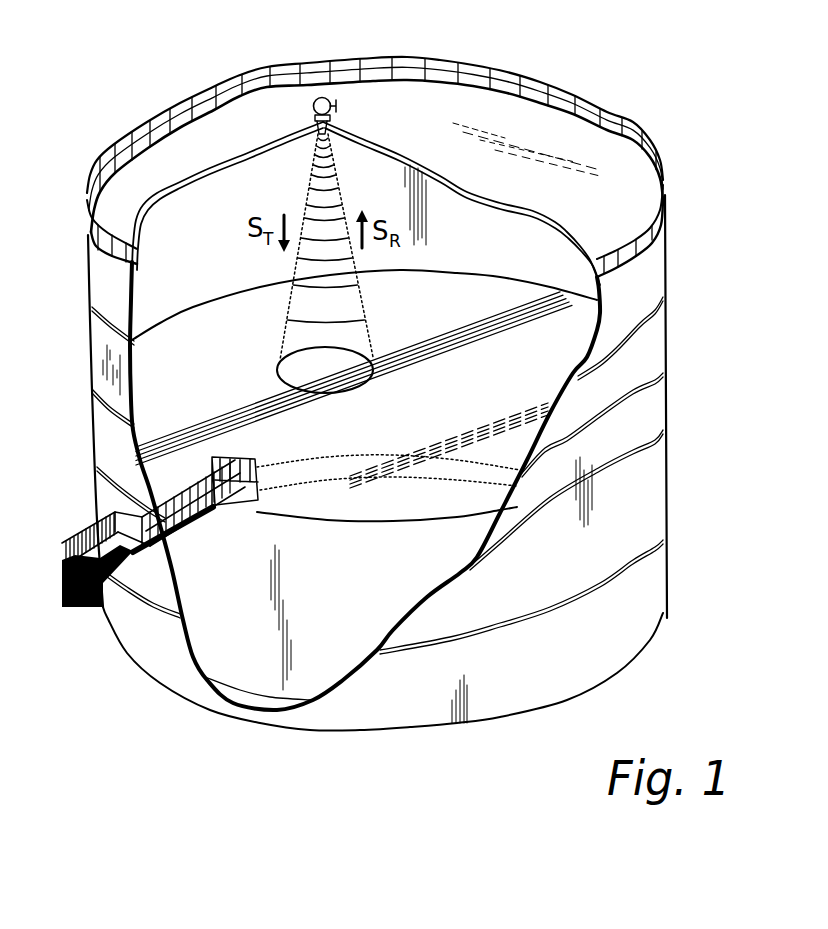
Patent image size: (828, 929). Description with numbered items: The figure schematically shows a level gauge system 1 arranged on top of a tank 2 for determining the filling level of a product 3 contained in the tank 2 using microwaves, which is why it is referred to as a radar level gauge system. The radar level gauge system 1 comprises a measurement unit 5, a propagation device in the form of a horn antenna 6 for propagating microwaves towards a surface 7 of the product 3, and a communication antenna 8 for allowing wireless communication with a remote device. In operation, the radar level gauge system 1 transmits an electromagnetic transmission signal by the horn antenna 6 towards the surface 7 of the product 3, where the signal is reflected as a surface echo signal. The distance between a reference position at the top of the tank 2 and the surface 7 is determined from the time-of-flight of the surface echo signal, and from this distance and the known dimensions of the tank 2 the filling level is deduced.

The level gauge system 1 is at (338, 90).
The tank 2 is at (647, 350).
The product 3 is at (323, 617).
The measurement unit 5 is at (285, 85).
The horn antenna 6 is at (310, 138).
The surface 7 is at (453, 520).
The communication antenna 8 is at (340, 106).